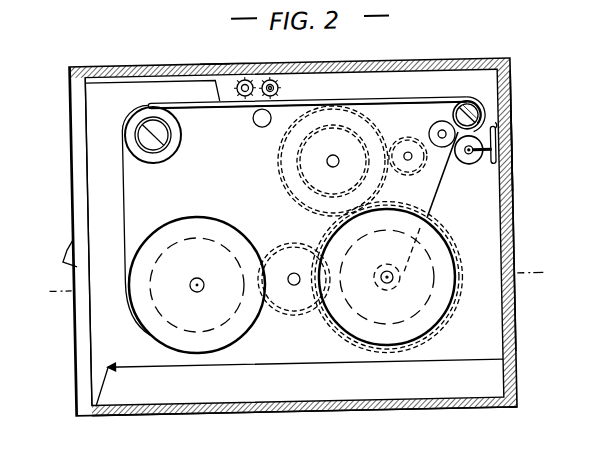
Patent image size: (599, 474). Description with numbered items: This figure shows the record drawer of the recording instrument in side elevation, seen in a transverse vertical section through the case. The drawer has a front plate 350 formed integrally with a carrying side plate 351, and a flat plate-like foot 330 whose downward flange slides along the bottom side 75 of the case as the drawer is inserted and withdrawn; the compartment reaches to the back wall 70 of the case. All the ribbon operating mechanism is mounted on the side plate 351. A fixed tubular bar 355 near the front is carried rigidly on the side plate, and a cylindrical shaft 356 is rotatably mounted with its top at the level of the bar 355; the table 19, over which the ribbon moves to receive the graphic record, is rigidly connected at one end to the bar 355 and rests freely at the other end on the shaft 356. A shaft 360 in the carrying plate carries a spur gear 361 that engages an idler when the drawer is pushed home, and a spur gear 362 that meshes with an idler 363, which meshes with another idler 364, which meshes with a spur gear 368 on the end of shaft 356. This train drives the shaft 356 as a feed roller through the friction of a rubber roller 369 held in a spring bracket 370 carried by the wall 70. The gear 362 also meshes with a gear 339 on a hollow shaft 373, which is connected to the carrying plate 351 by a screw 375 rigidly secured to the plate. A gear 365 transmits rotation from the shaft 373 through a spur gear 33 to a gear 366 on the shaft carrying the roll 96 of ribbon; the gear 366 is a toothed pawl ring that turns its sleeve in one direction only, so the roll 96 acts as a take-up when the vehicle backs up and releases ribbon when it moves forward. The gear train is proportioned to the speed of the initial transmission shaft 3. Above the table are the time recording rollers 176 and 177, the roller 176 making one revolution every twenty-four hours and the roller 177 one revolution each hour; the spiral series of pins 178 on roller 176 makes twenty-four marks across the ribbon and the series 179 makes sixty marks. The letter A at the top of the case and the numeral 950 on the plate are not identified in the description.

The casing A is at (505, 67).
The initial transmission shaft 3 is at (296, 283).
The table 19 is at (193, 112).
The spur gear 33 is at (441, 318).
The back wall 70 is at (512, 232).
The bottom side 75 is at (212, 417).
The roll of ribbon 96 is at (187, 219).
The roller 176 is at (243, 80).
The roller 177 is at (271, 81).
The spiral series of pins 178 is at (215, 67).
The series of pins 179 is at (281, 92).
The foot 330 is at (299, 380).
The gear 339 is at (441, 234).
The front plate 350 is at (71, 137).
The carrying side plate 351 is at (152, 98).
The cylindrical bar 355 is at (174, 154).
The cylindrical shaft 356 is at (494, 136).
The shaft 360 is at (333, 172).
The spur gear 361 is at (279, 180).
The spur gear 362 is at (294, 204).
The idler 363 is at (398, 178).
The idler 364 is at (428, 138).
The gear 365 is at (288, 320).
The gear 366 is at (159, 321).
The spur gear 368 is at (480, 118).
The rubber roller 369 is at (470, 172).
The spring bracket 370 is at (512, 178).
The hollow shaft 373 is at (382, 291).
The screw 375 is at (200, 283).
The mounting plate 950 is at (385, 105).